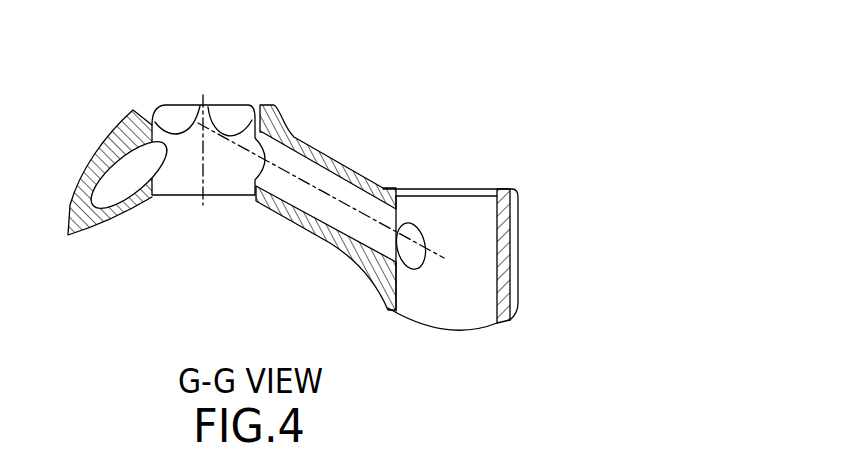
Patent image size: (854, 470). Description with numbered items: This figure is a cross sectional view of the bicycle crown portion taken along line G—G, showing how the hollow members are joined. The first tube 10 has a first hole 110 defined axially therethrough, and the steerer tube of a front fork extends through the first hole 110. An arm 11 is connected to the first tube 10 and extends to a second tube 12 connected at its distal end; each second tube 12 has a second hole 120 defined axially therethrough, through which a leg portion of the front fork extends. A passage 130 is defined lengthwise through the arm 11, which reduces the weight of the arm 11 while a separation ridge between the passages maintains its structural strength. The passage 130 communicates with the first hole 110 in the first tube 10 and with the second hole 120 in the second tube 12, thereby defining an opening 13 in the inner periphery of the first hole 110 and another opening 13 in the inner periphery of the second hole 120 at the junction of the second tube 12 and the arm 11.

The first tube 10 is at (256, 175).
The first hole 110 is at (222, 165).
The arm 11 is at (312, 222).
The passage 130 is at (307, 175).
The second tube 12 is at (508, 259).
The second hole 120 is at (435, 286).
The opening 13 is at (414, 242).